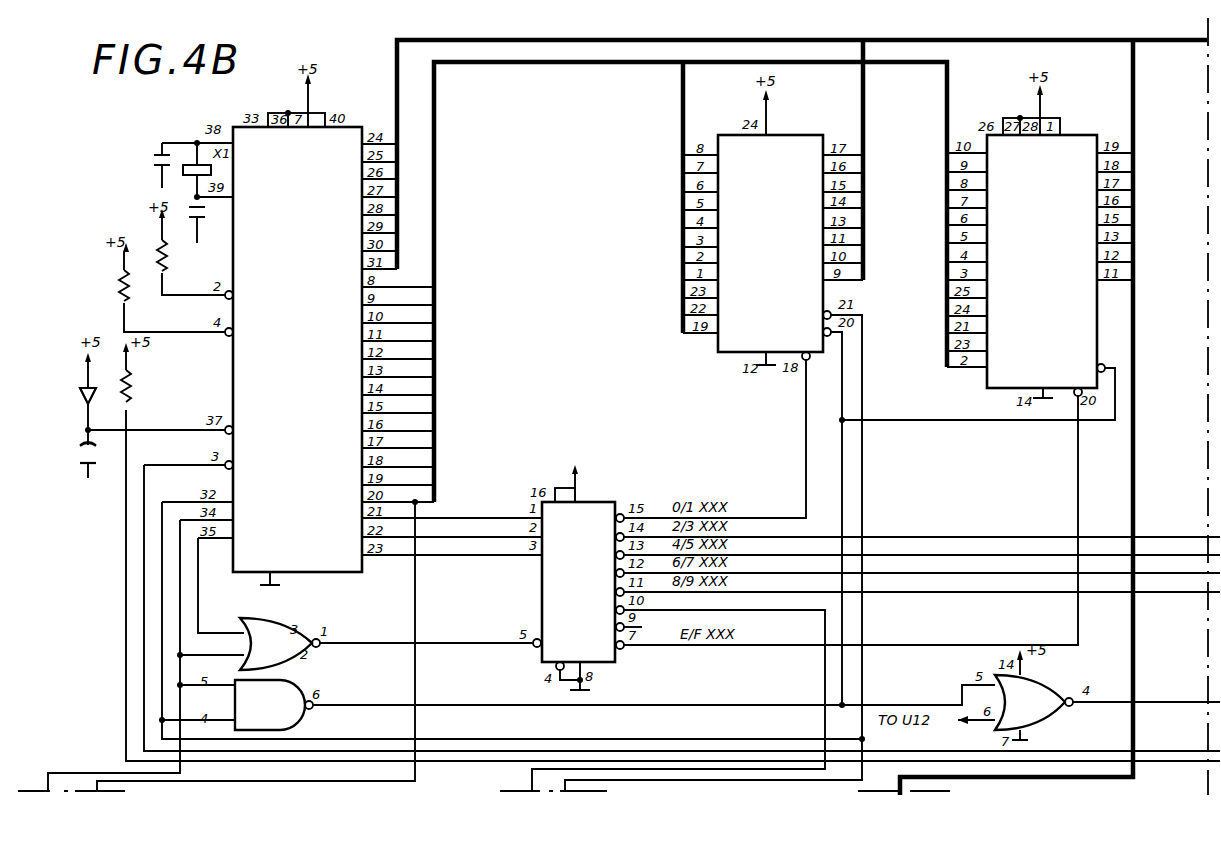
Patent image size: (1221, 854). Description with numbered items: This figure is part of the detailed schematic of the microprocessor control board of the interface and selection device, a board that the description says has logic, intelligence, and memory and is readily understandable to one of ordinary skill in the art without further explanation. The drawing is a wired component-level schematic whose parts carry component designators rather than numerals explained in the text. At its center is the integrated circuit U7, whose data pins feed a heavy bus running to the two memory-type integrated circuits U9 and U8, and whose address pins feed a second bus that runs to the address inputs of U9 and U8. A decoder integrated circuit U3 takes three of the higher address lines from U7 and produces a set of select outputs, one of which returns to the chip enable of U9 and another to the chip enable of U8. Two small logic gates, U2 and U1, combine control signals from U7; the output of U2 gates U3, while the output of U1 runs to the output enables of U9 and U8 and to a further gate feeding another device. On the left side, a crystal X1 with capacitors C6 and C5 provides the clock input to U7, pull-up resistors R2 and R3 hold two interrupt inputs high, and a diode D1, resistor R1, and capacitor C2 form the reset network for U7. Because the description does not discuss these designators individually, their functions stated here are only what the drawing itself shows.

The microprocessor U7 is at (297, 349).
The RAM memory U9 is at (770, 244).
The ROM memory U8 is at (1042, 262).
The address decoder U3 is at (578, 582).
The OR gate U2 is at (276, 644).
The AND gate U1 is at (270, 705).
The resistor 4.7k R1 is at (145, 386).
The resistor 10K R2 is at (177, 263).
The resistor 10K R3 is at (139, 297).
The capacitor 22uF C2 is at (73, 456).
The capacitor 22pF C5 is at (195, 211).
The capacitor 22pF C6 is at (140, 165).
The diode 1N914 D1 is at (70, 391).
The crystal X1 is at (206, 160).